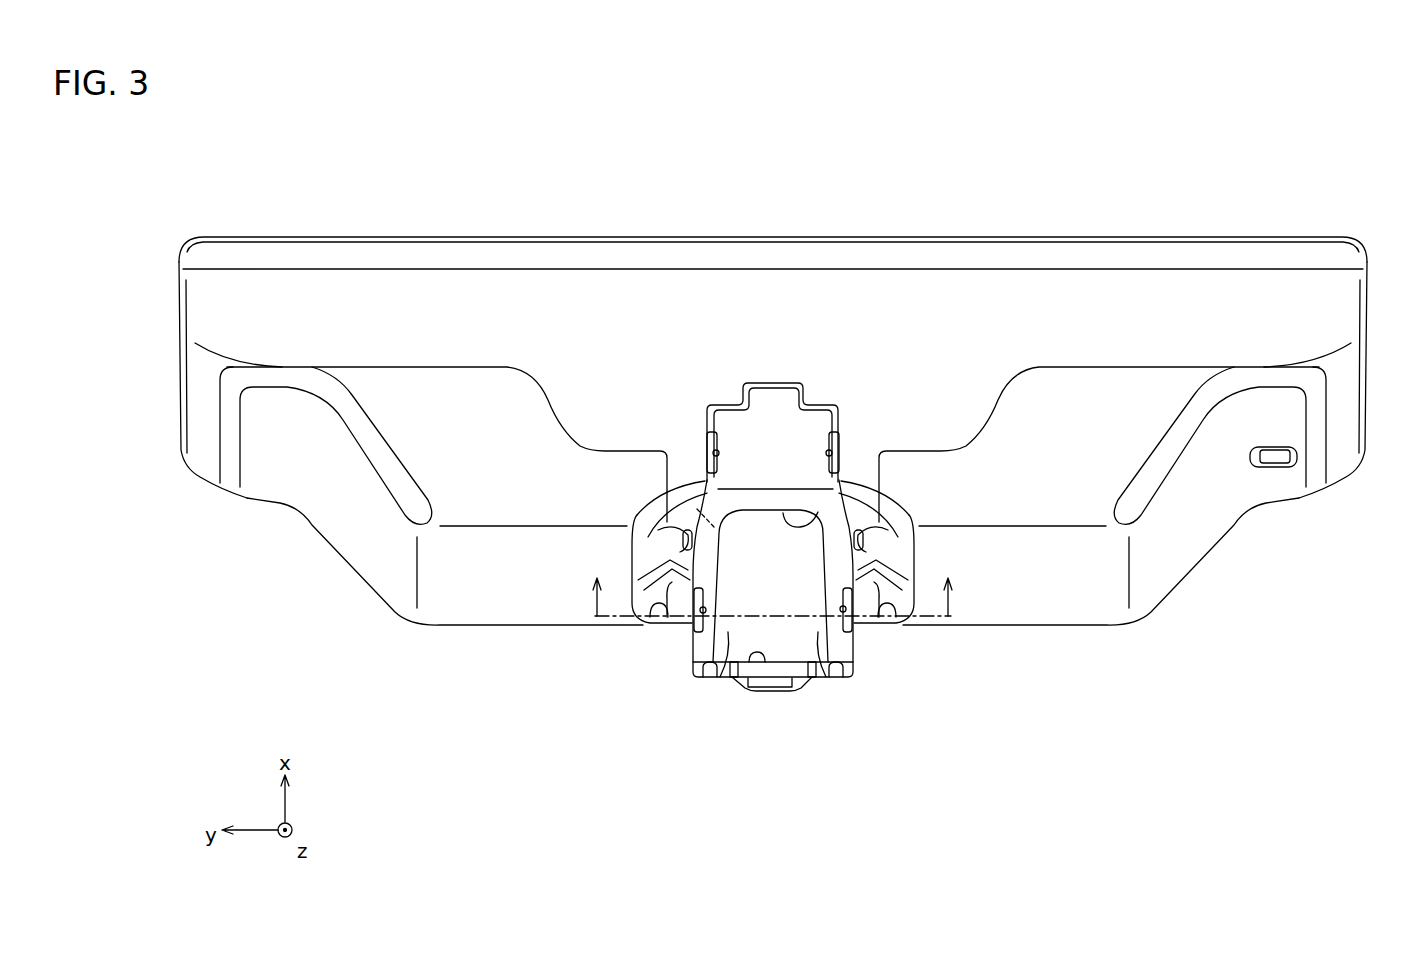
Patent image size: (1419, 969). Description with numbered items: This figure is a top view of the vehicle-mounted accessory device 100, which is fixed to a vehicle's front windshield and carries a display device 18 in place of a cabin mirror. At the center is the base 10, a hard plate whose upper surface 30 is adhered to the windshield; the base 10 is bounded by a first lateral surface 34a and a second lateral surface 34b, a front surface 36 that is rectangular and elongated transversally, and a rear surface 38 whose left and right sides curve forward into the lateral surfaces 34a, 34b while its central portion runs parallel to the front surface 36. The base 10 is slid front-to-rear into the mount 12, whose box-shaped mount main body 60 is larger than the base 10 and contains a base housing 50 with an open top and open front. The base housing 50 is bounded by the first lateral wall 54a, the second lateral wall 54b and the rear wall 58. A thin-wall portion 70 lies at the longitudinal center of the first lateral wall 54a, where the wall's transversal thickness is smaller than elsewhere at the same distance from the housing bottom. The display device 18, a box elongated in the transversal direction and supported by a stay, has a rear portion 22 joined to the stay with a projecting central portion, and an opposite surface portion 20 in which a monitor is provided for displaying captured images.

The vehicle-mounted accessory device 100 is at (796, 877).
The base 10 is at (768, 660).
The mount 12 is at (780, 384).
The display device 18 is at (1348, 478).
The surface portion 20 is at (1101, 236).
The rear portion 22 is at (1025, 590).
The upper surface 30 is at (787, 643).
The first lateral surface 34a is at (728, 633).
The second lateral surface 34b is at (818, 633).
The front surface 36 is at (753, 660).
The rear surface 38 is at (818, 512).
The base housing 50 is at (823, 663).
The first lateral wall 54a is at (650, 507).
The second lateral wall 54b is at (895, 507).
The rear wall 58 is at (763, 510).
The mount main body 60 is at (693, 604).
The thin-wall portion 70 is at (665, 594).